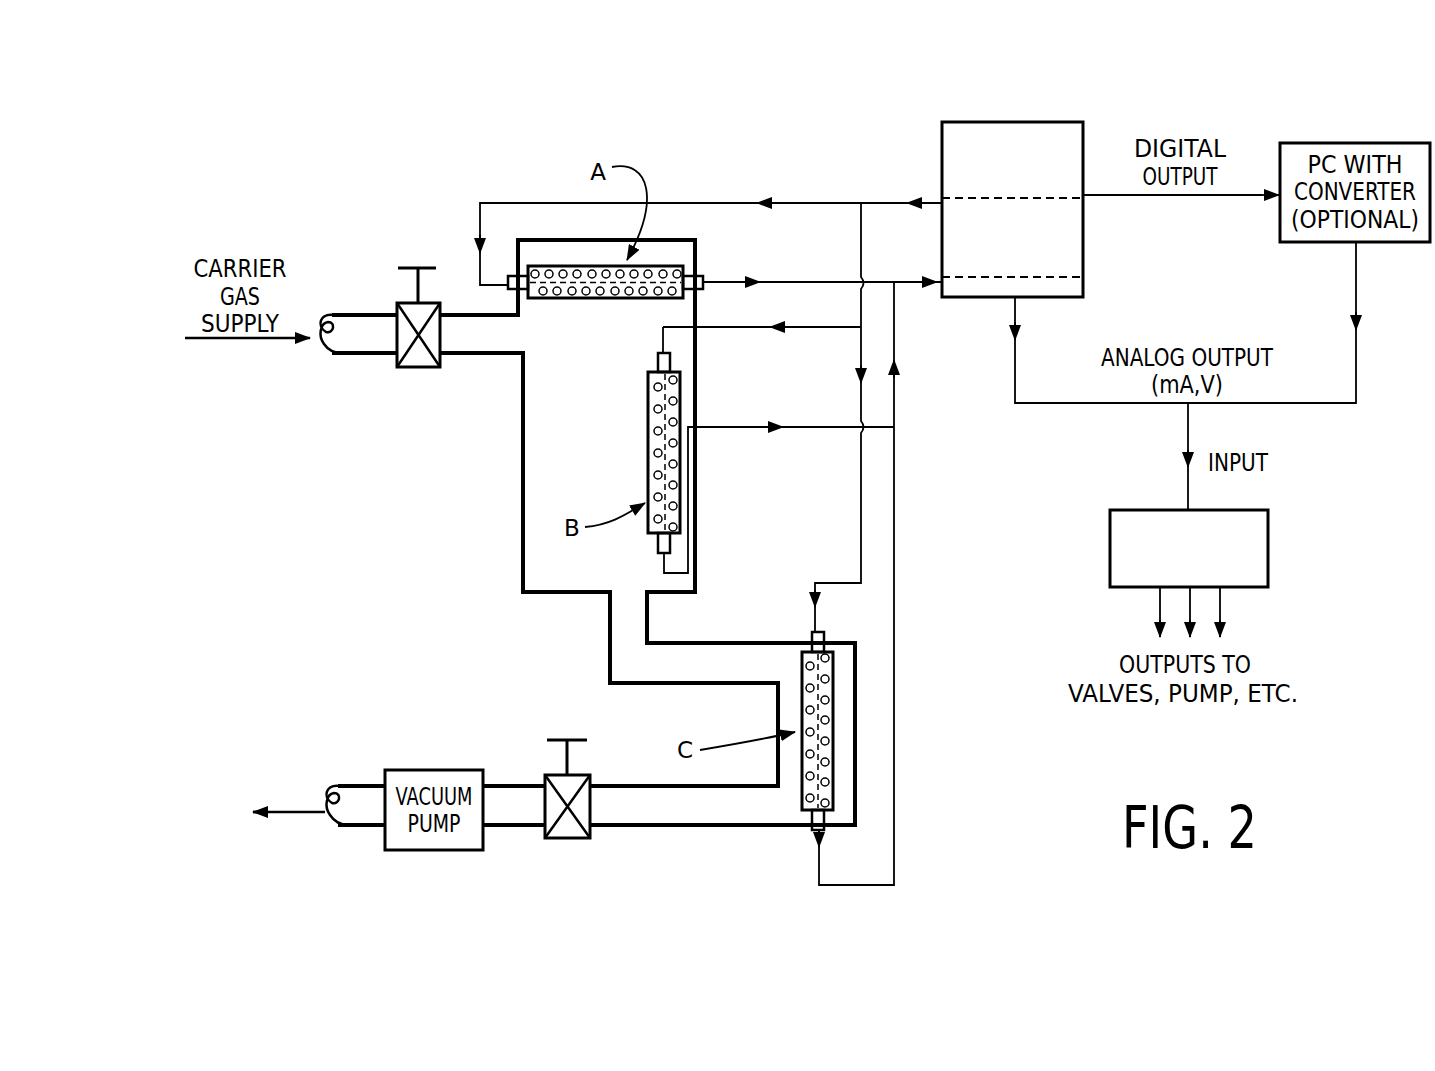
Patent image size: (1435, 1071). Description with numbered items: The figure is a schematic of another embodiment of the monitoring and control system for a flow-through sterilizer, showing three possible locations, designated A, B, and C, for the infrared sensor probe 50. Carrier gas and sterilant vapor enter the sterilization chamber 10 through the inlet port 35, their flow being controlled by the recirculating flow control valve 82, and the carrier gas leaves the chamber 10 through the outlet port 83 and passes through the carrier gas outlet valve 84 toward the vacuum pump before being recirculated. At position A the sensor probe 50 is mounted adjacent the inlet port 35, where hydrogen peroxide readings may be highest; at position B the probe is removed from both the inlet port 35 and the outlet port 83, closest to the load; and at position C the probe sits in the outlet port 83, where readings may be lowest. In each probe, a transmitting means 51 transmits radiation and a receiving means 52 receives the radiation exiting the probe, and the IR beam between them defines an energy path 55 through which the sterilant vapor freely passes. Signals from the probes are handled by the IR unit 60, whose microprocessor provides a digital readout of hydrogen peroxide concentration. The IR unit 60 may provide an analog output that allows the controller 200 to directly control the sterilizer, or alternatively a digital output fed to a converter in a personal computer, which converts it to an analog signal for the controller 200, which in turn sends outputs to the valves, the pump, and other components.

The sterilization chamber 10 is at (505, 583).
The inlet port 35 is at (500, 333).
The sensor probe 50 is at (602, 301).
The transmitting means 51 is at (828, 200).
The receiving means 52 is at (918, 284).
The energy path 55 is at (637, 290).
The IR unit 60 is at (1013, 122).
The recirculating flow control valve 82 is at (418, 368).
The outlet port 83 is at (625, 620).
The carrier gas outlet valve 84 is at (567, 840).
The controller 200 is at (1270, 546).